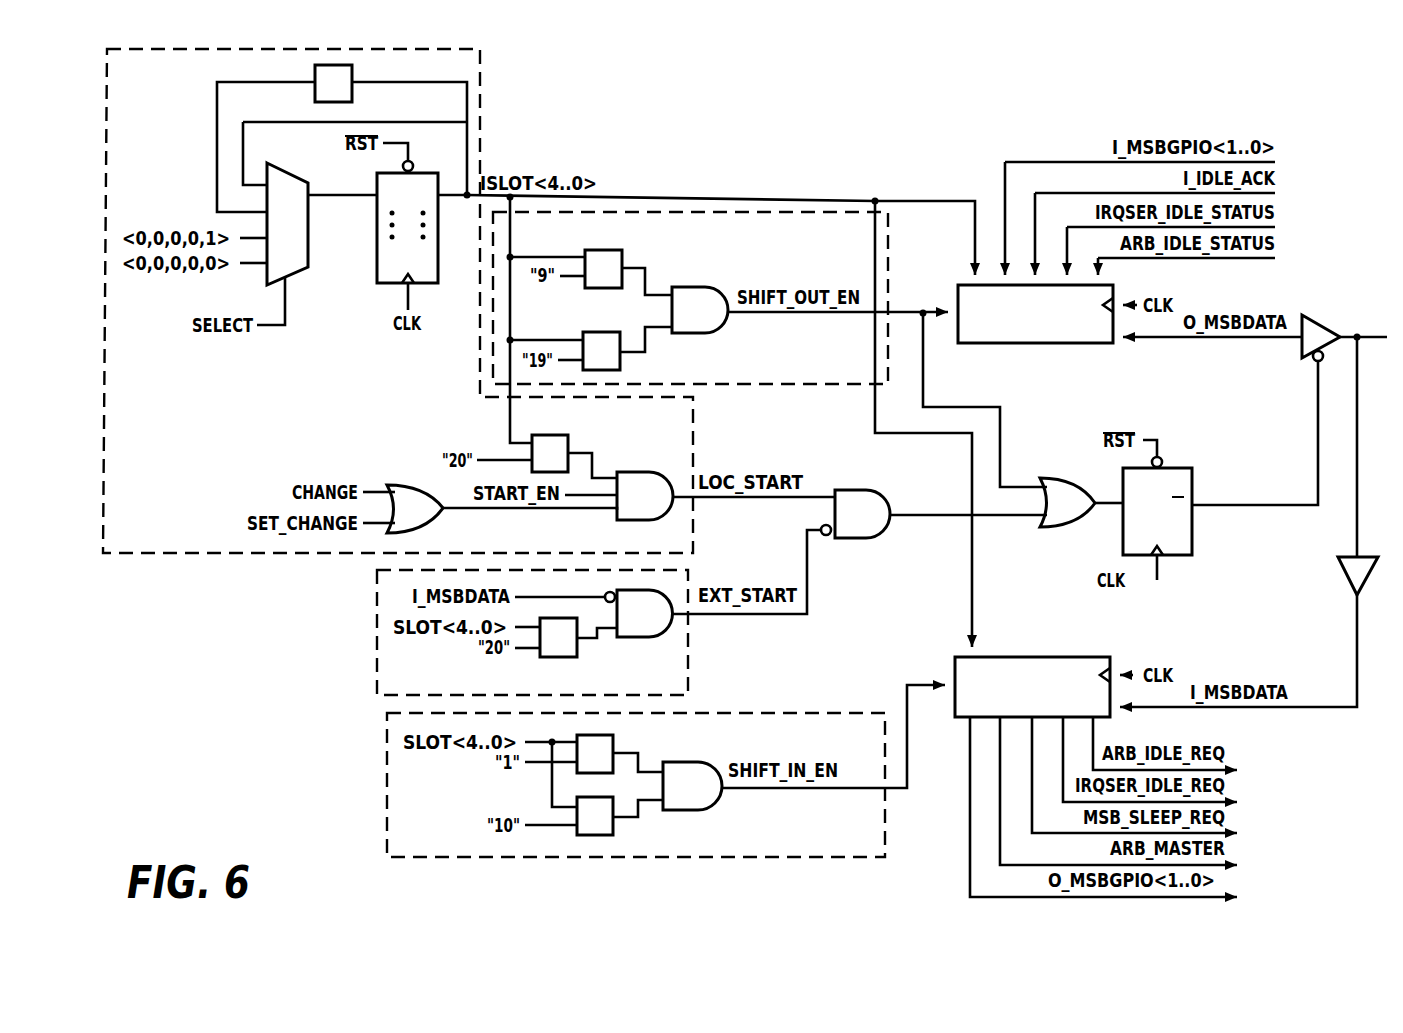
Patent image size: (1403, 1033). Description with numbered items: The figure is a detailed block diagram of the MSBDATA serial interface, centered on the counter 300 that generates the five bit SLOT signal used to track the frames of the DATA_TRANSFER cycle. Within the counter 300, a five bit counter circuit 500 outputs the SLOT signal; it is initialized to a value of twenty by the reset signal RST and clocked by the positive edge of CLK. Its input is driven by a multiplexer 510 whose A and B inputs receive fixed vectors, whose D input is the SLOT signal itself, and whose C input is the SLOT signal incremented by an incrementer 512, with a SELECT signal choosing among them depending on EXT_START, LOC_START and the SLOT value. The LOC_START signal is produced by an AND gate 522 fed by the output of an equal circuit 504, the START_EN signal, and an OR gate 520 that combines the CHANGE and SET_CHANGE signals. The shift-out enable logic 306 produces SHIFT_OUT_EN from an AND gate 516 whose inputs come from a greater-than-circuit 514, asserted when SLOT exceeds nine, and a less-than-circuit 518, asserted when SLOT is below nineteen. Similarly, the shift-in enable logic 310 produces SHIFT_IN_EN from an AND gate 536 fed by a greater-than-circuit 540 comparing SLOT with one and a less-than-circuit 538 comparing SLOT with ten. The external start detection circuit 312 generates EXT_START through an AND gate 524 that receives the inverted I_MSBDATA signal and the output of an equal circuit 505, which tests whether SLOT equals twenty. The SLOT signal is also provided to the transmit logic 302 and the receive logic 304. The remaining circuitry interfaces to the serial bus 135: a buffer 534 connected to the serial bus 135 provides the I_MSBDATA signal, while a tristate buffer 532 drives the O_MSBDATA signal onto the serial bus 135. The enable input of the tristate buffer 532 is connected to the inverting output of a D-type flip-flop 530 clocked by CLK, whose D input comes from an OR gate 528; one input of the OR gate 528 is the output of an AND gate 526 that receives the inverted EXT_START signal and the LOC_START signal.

The serial bus 135 is at (1373, 340).
The counter 300 is at (197, 556).
The transmit logic 302 is at (1073, 343).
The receive logic 304 is at (1093, 657).
The shift-out enable logic 306 is at (767, 390).
The shift-in enable logic 310 is at (807, 862).
The external start detection circuit 312 is at (367, 632).
The five bit counter circuit 500 is at (373, 223).
The equal circuit 504 is at (558, 435).
The equal circuit 505 is at (552, 657).
The multiplexer 510 is at (298, 273).
The incrementer 512 is at (352, 92).
The greater-than-circuit 514 is at (603, 250).
The AND gate 516 is at (685, 333).
The less-than-circuit 518 is at (593, 332).
The OR gate 520 is at (433, 525).
The AND gate 522 is at (625, 520).
The AND gate 524 is at (645, 637).
The AND gate 526 is at (852, 538).
The OR gate 528 is at (1060, 478).
The D-type flip-flop 530 is at (1192, 537).
The tristate buffer 532 is at (1317, 315).
The buffer 534 is at (1343, 578).
The AND gate 536 is at (683, 762).
The less-than-circuit 538 is at (613, 828).
The greater-than-circuit 540 is at (613, 745).